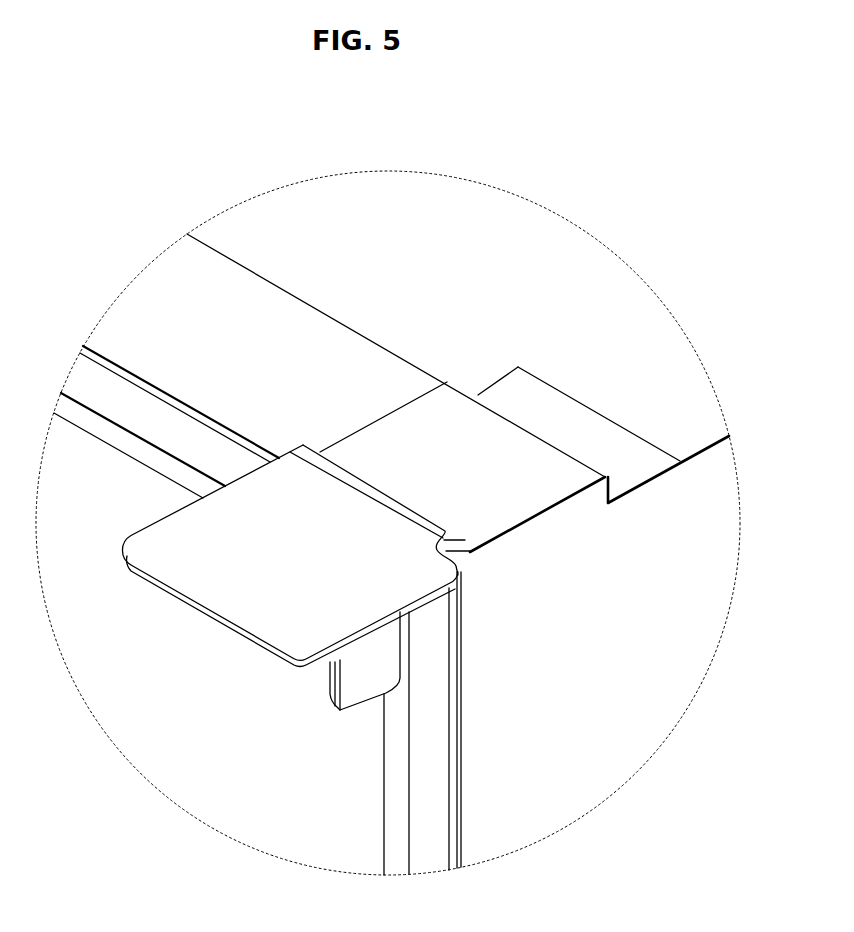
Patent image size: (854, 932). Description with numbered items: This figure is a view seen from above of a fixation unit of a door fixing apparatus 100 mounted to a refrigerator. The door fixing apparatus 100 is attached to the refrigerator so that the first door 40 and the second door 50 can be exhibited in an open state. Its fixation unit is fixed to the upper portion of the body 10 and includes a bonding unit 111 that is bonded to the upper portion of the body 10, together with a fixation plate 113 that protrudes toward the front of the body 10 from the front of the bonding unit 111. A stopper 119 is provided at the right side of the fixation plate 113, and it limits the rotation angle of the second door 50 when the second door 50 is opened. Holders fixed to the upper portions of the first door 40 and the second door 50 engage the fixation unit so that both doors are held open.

The body 10 is at (475, 212).
The door fixing apparatus 100 is at (345, 420).
The bonding unit 111 is at (503, 500).
The fixation plate 113 is at (257, 603).
The stopper 119 is at (372, 662).
The first door 40 is at (425, 768).
The second door 50 is at (243, 745).